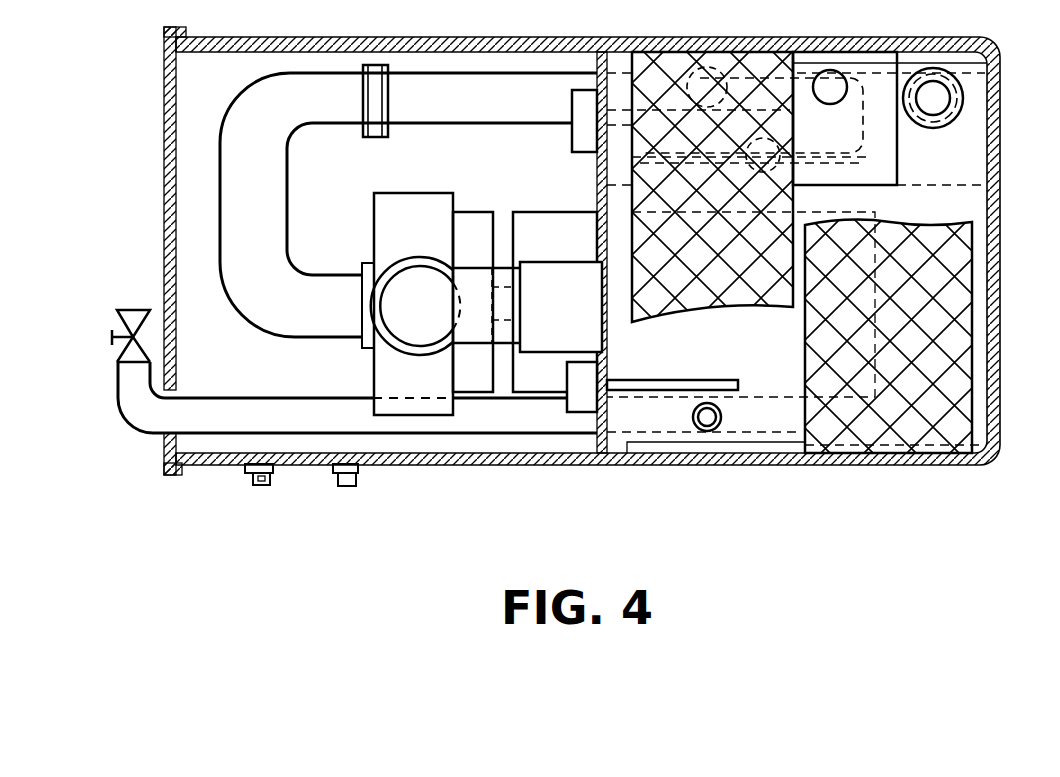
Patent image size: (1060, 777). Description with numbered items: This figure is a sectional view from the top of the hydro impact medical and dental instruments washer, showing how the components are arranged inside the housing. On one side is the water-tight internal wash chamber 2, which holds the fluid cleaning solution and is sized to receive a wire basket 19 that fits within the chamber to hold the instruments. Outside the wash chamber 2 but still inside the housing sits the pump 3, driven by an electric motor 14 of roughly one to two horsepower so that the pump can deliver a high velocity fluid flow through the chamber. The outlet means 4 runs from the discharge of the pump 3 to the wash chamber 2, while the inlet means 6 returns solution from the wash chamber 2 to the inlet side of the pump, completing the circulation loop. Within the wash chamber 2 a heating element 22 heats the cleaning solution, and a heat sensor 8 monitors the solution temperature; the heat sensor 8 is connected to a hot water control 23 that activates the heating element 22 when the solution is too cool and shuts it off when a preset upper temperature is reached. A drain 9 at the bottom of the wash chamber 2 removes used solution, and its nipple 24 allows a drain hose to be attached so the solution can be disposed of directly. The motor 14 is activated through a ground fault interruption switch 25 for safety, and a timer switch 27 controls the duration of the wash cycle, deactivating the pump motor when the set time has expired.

The internal wash chamber 2 is at (786, 351).
The pump 3 is at (398, 230).
The outlet means 4 is at (545, 315).
The inlet means 6 is at (948, 97).
The heat sensor 8 is at (710, 380).
The drain 9 is at (722, 417).
The electric motor 14 is at (540, 232).
The wire basket 19 is at (935, 307).
The heating element 22 is at (867, 142).
The hot water control 23 is at (582, 403).
The nipple 24 is at (128, 380).
The ground fault interruption switch 25 is at (128, 352).
The timer switch 27 is at (347, 488).